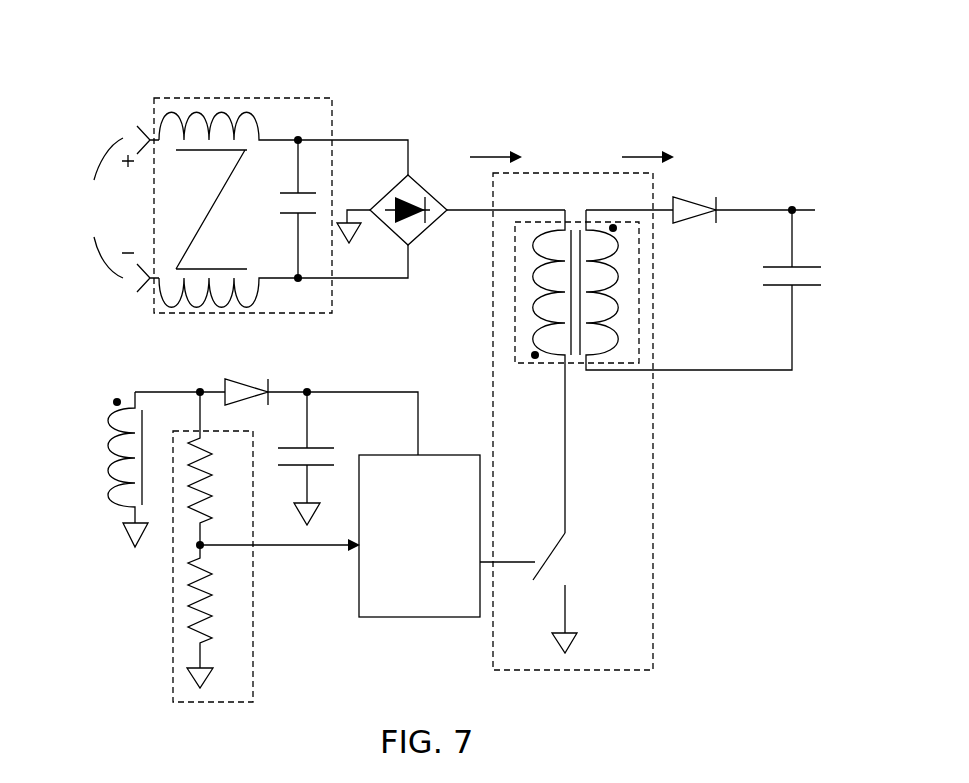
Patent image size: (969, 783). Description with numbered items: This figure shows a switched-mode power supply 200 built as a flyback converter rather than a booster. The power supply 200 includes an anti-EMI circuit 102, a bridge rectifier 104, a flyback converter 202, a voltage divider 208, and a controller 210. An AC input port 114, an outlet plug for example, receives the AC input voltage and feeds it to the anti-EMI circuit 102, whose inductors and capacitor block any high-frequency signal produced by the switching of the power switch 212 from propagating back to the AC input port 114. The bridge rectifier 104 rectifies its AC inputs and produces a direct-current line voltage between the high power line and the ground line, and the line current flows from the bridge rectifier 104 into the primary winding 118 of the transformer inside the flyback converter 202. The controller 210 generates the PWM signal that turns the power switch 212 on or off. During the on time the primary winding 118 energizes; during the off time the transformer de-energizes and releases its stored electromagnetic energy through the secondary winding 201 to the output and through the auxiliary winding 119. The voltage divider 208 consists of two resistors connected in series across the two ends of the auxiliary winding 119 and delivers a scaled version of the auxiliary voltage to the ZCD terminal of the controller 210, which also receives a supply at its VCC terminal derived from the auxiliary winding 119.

The power supply 200 is at (156, 74).
The anti-EMI circuit 102 is at (305, 98).
The bridge rectifier 104 is at (418, 178).
The AC input port 114 is at (114, 209).
The primary winding 118 is at (533, 295).
The auxiliary winding 119 is at (110, 438).
The secondary winding 201 is at (618, 292).
The flyback converter 202 is at (653, 430).
The voltage divider 208 is at (173, 618).
The controller 210 is at (427, 603).
The power switch 212 is at (570, 562).